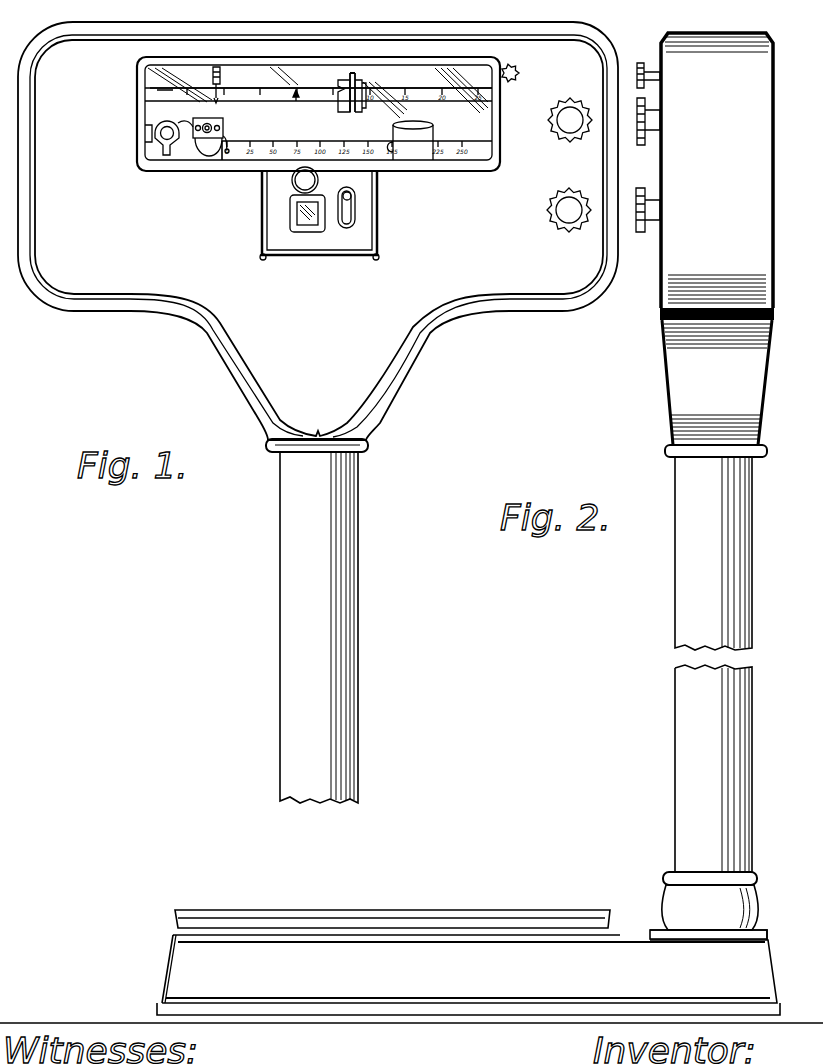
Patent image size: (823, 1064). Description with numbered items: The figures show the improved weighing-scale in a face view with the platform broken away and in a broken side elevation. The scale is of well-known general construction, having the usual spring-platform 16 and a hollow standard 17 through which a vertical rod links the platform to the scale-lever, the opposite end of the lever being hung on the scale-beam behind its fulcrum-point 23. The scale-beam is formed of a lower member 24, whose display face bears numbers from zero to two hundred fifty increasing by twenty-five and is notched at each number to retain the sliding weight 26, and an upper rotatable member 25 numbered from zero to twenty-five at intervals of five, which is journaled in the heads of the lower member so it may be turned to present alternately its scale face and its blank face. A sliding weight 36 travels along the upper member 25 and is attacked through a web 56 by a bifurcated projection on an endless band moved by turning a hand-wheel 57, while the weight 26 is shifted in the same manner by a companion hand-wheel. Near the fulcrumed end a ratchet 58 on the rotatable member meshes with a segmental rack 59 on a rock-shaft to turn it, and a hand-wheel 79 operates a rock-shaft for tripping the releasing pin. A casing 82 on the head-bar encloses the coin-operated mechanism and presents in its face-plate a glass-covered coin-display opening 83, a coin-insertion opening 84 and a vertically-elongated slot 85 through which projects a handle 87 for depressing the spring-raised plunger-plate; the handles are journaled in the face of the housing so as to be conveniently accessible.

In FIG. 1, the spring-platform 16 is at (411, 952).
In FIG. 1, the hollow standard 17 is at (352, 601).
In FIG. 2, the hollow standard 17 is at (690, 572).
In FIG. 1, the fulcrum-point 23 is at (207, 138).
In FIG. 1, the lower scale-beam member 24 is at (266, 68).
In FIG. 1, the rotatable upper scale-beam member 25 is at (283, 100).
In FIG. 1, the sliding weight 26 is at (426, 133).
In FIG. 1, the sliding weight 36 is at (363, 83).
In FIG. 1, the web 56 is at (356, 80).
In FIG. 1, the hand-wheel 57 is at (557, 140).
In FIG. 2, the hand-wheel 57 is at (640, 145).
In FIG. 1, the ratchet 58 is at (207, 124).
In FIG. 1, the segmental rack 59 is at (218, 67).
In FIG. 1, the hand-wheel 79 is at (521, 75).
In FIG. 2, the hand-wheel 79 is at (634, 62).
In FIG. 1, the casing 82 is at (372, 243).
In FIG. 1, the coin-display opening 83 is at (304, 233).
In FIG. 1, the coin-insertion opening 84 is at (293, 183).
In FIG. 1, the vertically-elongated slot 85 is at (356, 209).
In FIG. 1, the handle 87 is at (352, 196).